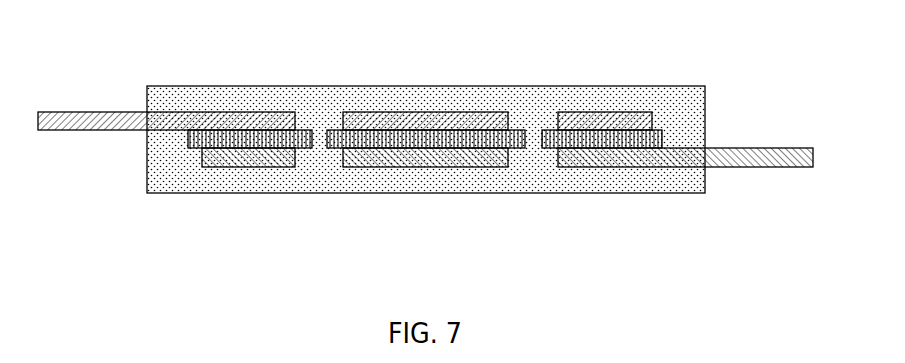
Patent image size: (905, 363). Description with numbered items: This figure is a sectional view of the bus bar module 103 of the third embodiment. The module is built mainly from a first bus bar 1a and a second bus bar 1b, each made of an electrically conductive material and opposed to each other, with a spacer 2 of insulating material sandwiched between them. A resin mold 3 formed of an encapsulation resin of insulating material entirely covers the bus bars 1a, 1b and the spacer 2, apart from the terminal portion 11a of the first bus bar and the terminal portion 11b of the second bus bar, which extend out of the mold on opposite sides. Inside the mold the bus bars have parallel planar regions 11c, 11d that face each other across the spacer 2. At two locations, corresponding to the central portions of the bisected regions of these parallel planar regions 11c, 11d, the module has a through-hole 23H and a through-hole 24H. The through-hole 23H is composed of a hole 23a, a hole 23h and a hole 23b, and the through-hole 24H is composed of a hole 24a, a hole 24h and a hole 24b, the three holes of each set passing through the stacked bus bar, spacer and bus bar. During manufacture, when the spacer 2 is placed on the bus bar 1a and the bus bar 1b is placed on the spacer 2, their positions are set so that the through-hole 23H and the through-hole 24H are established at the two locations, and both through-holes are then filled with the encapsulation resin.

The bus bar module 103 is at (714, 41).
The resin mold 3 is at (326, 93).
The terminal portion 11b is at (105, 112).
The parallel planar region 11d is at (240, 119).
The parallel planar region 11c is at (227, 167).
The terminal portion 11a is at (763, 168).
The hole 23a is at (297, 162).
The hole 23h is at (297, 120).
The hole 23b is at (313, 150).
The through-hole 23H is at (426, 245).
The bus bar 1b is at (400, 112).
The bus bar 1a is at (403, 166).
The spacer 2 is at (665, 136).
The hole 24a is at (508, 160).
The hole 24h is at (508, 120).
The hole 24b is at (540, 150).
The through-hole 24H is at (643, 245).